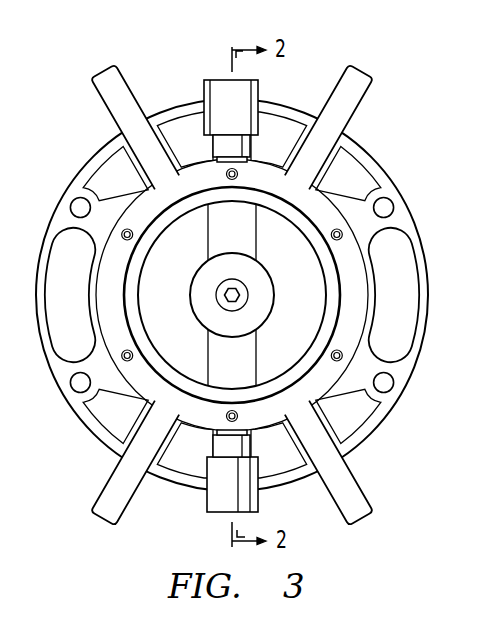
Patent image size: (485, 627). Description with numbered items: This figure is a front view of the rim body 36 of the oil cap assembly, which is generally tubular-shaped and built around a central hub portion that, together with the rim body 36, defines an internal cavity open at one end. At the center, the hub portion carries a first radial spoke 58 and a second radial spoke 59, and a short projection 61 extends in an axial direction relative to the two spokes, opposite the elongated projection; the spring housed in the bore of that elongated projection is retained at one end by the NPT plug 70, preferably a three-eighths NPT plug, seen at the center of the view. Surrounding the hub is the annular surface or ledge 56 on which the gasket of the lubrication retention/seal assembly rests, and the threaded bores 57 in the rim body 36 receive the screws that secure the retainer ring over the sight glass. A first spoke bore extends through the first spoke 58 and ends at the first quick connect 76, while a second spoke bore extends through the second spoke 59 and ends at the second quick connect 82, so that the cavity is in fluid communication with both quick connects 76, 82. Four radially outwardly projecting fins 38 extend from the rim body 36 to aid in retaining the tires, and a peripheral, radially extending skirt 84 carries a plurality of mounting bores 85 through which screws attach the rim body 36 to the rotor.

The rim body 36 is at (372, 145).
The radially outwardly projecting fins 38 is at (100, 74).
The annular surface or ledge 56 is at (336, 277).
The threaded bores 57 is at (237, 173).
The first radial spoke 58 is at (253, 230).
The second radial spoke 59 is at (257, 345).
The short projection 61 is at (273, 298).
The NPT plug 70 is at (228, 293).
The first quick connect 76 is at (204, 90).
The second quick connect 82 is at (207, 500).
The skirt 84 is at (380, 430).
The mounting bores 85 is at (70, 205).